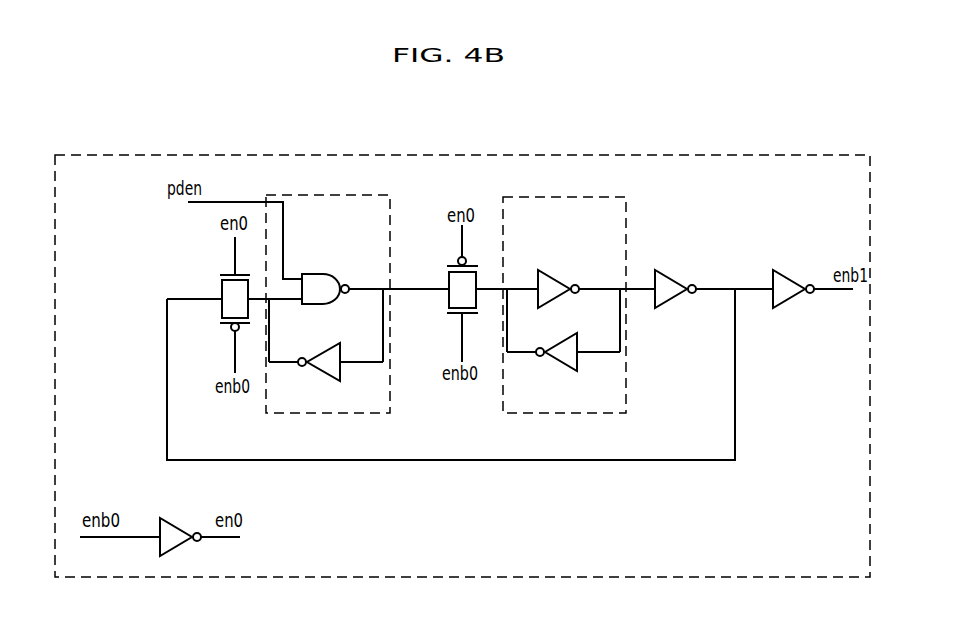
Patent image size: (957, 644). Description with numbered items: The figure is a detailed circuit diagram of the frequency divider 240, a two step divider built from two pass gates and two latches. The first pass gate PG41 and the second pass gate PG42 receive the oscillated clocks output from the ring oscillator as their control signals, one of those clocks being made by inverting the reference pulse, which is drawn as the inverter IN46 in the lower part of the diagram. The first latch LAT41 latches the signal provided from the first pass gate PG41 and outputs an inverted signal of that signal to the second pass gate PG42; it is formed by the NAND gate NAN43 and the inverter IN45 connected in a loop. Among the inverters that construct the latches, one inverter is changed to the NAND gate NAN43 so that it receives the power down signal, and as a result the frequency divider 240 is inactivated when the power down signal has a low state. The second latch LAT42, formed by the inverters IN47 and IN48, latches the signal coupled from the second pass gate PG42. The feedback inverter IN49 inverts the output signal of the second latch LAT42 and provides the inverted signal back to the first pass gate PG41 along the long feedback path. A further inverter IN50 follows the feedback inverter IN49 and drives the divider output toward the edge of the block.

The frequency divider 240 is at (790, 160).
The first pass gate PG41 is at (213, 305).
The NAND gate NAN43 is at (324, 272).
The inverter IN45 is at (326, 374).
The first latch LAT41 is at (328, 318).
The second pass gate PG42 is at (440, 293).
The inverter IN47 is at (558, 275).
The inverter IN48 is at (563, 366).
The second latch LAT42 is at (564, 319).
The feedback inverter IN49 is at (674, 275).
The inverter IN50 is at (793, 275).
The inverter IN46 is at (180, 522).